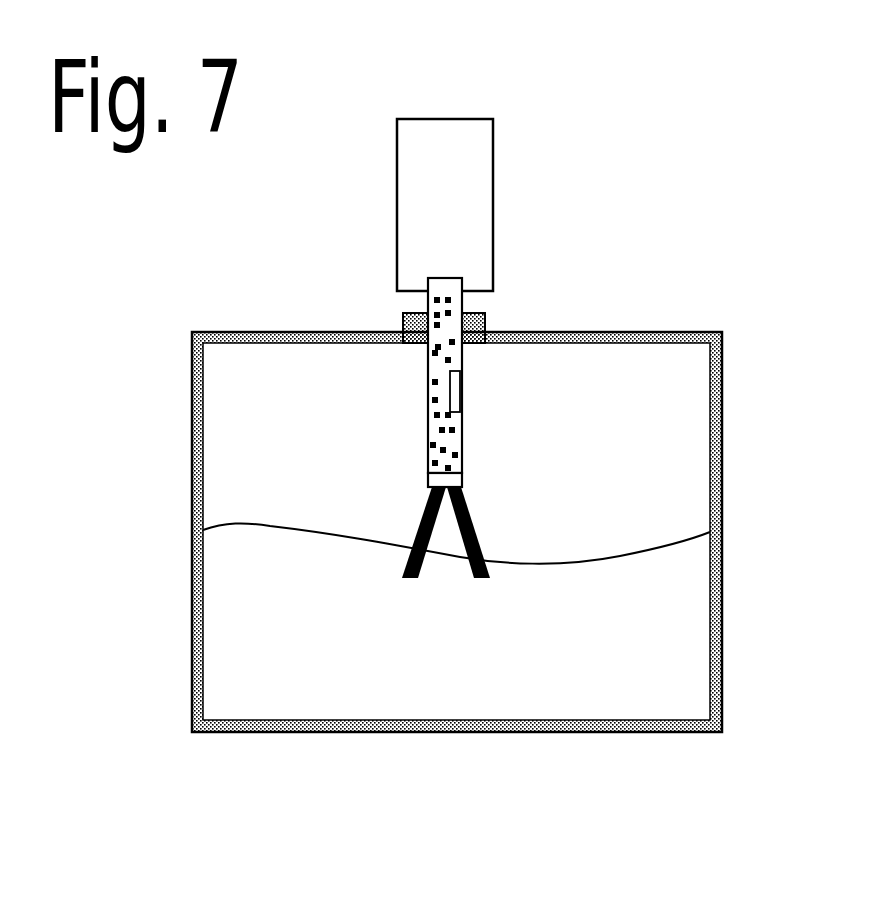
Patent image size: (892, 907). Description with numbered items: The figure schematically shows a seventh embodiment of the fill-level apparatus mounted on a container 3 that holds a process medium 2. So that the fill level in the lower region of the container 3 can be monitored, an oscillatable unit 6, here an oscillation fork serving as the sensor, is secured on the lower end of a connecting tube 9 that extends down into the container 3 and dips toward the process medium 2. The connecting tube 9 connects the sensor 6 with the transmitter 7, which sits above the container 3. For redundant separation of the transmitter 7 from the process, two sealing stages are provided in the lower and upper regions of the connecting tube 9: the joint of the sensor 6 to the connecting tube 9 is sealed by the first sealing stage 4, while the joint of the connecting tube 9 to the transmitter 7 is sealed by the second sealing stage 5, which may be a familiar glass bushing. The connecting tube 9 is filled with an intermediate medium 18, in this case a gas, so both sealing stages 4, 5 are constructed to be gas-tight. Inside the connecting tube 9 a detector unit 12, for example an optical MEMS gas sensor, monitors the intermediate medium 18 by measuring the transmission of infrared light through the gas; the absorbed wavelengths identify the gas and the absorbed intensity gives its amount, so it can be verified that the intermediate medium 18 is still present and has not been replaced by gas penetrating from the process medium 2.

The process medium 2 is at (647, 618).
The container 3 is at (626, 332).
The first sealing stage 4 is at (465, 480).
The second sealing stage 5 is at (430, 283).
The oscillatable unit 6 is at (402, 568).
The transmitter 7 is at (493, 187).
The connecting tube 9 is at (427, 432).
The detector unit 12 is at (467, 407).
The intermediate medium 18 is at (462, 343).